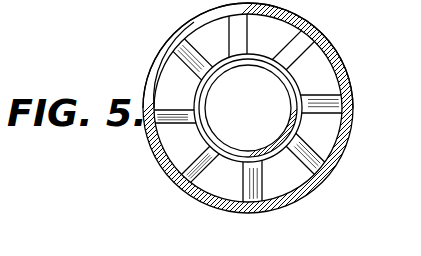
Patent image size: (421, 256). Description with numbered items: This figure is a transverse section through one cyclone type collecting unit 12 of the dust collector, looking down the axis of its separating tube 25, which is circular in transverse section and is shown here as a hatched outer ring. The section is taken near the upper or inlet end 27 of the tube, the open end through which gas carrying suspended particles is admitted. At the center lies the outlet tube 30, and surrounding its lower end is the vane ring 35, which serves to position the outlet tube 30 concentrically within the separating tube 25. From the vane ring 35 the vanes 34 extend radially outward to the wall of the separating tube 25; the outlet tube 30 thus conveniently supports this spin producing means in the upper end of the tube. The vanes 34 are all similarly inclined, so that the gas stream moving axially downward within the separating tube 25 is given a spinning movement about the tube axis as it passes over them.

The cyclone type collecting unit 12 is at (345, 91).
The separating tube 25 is at (341, 150).
The inlet end 27 is at (167, 80).
The outlet tube 30 is at (213, 84).
The vanes 34 is at (202, 38).
The vane ring 35 is at (208, 126).